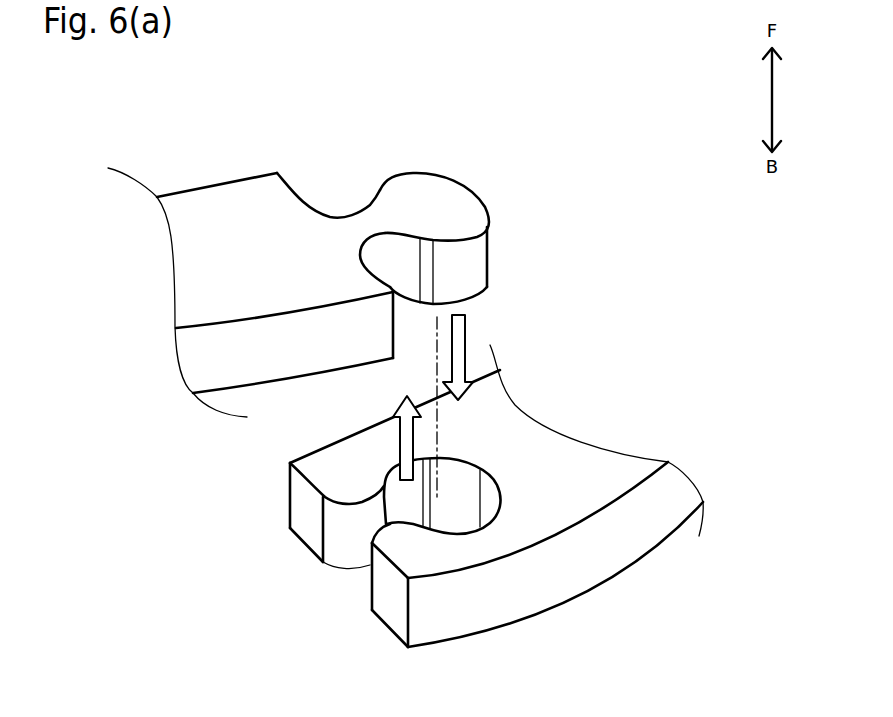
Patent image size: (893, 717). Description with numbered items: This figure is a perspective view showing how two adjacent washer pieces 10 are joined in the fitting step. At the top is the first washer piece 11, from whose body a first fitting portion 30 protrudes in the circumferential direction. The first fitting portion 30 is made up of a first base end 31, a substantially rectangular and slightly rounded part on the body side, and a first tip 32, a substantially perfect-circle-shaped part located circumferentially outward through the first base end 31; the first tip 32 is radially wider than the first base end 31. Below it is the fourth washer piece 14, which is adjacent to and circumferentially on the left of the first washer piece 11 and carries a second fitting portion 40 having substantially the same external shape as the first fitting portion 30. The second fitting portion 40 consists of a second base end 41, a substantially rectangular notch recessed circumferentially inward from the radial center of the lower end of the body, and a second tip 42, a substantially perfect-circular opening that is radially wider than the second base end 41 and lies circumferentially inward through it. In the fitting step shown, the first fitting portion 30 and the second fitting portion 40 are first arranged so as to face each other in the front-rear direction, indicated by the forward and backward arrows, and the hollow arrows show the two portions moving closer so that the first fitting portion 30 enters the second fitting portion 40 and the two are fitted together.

The washer piece 10 is at (405, 383).
The first washer piece 11 is at (212, 140).
The fourth washer piece 14 is at (575, 622).
The first fitting portion 30 is at (395, 135).
The first base end 31 is at (355, 223).
The first tip 32 is at (442, 188).
The second fitting portion 40 is at (342, 596).
The second base end 41 is at (354, 522).
The second tip 42 is at (402, 489).